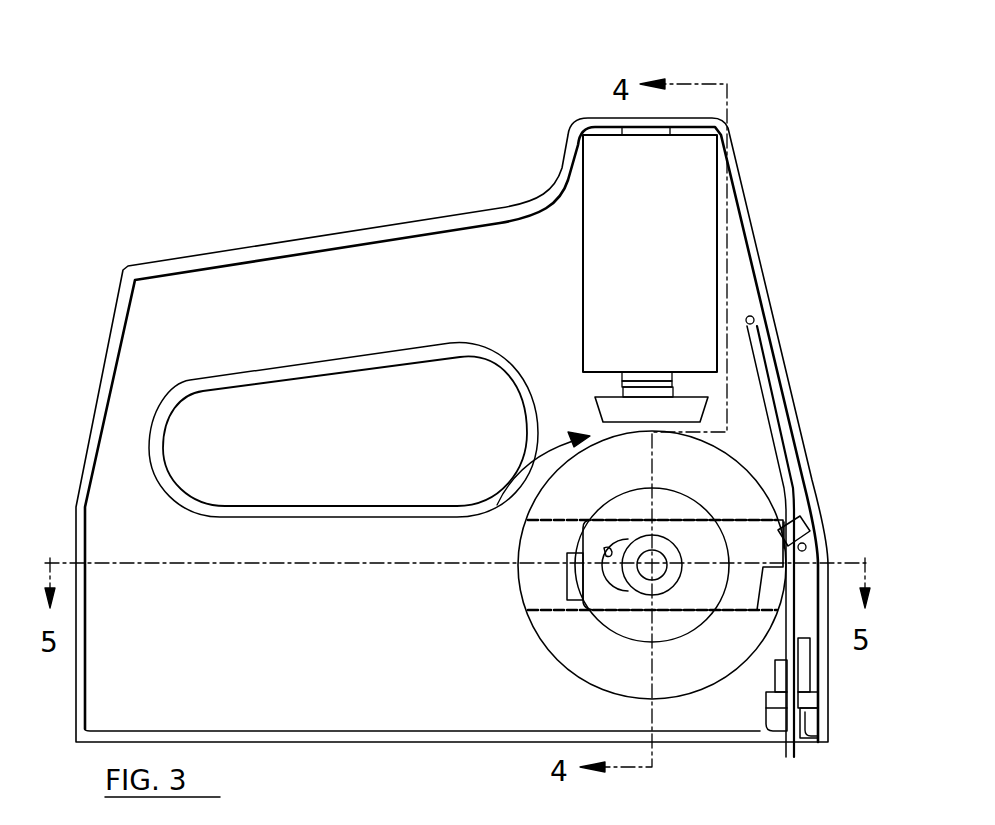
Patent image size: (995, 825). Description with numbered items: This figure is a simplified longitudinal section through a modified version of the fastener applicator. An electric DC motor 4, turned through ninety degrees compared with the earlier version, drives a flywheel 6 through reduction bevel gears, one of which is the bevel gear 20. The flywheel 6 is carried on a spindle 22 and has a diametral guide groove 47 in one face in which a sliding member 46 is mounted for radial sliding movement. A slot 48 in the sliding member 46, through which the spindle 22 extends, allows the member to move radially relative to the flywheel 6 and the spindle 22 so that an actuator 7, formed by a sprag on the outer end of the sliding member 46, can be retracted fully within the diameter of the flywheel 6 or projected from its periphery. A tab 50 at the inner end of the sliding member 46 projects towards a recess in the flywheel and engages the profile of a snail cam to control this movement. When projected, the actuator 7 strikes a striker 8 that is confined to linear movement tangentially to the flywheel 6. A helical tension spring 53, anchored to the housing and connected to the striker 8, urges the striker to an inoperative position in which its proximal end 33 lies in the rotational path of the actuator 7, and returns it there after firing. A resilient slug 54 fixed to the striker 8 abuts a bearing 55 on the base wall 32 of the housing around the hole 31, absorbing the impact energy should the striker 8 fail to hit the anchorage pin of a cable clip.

The electric DC motor 4 is at (662, 243).
The flywheel 6 is at (562, 637).
The actuator 7 is at (796, 538).
The striker 8 is at (790, 668).
The reduction bevel gear 20 is at (615, 412).
The spindle 22 is at (645, 572).
The hole 31 is at (787, 750).
The base wall 32 is at (405, 740).
The proximal end 33 is at (773, 550).
The sliding member 46 is at (723, 547).
The guide groove 47 is at (550, 600).
The slot 48 is at (606, 553).
The tab 50 is at (567, 578).
The helical tension spring 53 is at (778, 435).
The resilient slug 54 is at (806, 700).
The bearing 55 is at (812, 720).